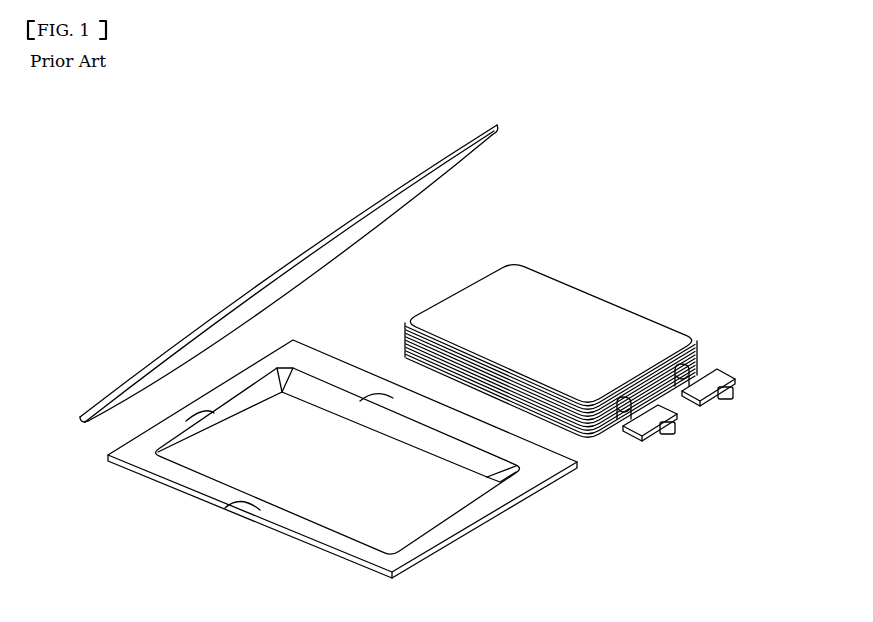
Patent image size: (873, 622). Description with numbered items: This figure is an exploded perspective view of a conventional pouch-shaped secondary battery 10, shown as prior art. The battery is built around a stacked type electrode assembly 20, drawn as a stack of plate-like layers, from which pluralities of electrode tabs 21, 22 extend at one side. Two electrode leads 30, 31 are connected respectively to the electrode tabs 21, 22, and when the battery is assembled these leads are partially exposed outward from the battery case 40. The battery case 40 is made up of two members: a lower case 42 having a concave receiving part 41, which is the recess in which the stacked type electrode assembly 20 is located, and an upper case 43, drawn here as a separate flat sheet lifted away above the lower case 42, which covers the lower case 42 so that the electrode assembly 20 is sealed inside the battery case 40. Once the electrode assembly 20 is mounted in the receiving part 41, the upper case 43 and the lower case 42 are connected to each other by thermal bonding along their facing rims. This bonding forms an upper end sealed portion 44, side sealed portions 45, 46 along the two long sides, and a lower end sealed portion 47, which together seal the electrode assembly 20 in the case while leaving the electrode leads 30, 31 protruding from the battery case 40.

The pouch-shaped secondary battery 10 is at (54, 111).
The stacked type electrode assembly 20 is at (620, 284).
The electrode tab 21 is at (680, 360).
The electrode tab 22 is at (620, 398).
The electrode lead 30 is at (736, 393).
The electrode lead 31 is at (679, 431).
The battery case 40 is at (28, 507).
The concave receiving part 41 is at (345, 476).
The lower case 42 is at (138, 475).
The upper case 43 is at (80, 420).
The upper end sealed portion 44 is at (493, 511).
The side sealed portion 45 is at (360, 401).
The side sealed portion 46 is at (225, 508).
The lower end sealed portion 47 is at (214, 413).